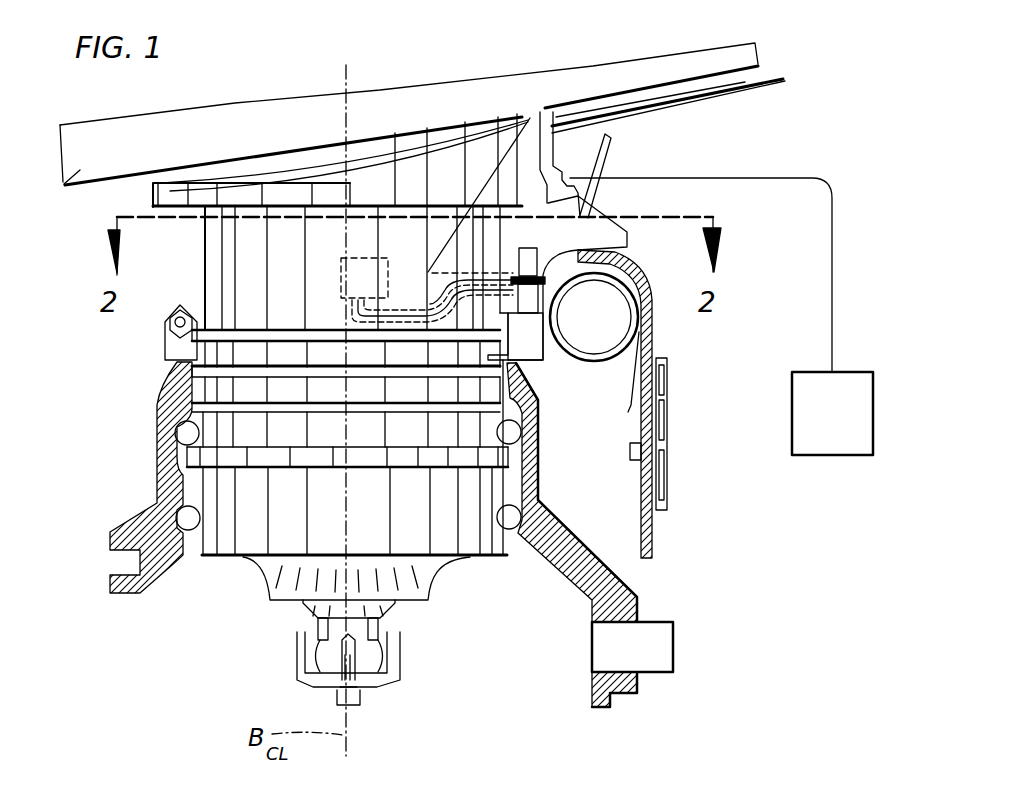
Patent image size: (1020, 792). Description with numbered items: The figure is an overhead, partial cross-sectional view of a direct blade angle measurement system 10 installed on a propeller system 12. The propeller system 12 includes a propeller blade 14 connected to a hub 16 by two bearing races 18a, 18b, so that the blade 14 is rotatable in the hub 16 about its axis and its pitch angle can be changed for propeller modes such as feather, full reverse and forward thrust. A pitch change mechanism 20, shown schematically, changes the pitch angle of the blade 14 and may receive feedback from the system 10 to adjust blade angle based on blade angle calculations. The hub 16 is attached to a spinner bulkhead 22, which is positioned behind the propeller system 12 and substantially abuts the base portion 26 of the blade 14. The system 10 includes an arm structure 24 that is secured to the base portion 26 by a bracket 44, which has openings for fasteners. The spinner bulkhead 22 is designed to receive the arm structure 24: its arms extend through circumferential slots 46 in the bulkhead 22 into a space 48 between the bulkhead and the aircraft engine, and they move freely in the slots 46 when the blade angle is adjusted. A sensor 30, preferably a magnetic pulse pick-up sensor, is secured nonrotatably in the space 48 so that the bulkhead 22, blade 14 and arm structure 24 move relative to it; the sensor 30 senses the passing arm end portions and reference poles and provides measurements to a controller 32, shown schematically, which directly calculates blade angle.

The direct blade angle measurement system 10 is at (748, 254).
The propeller system 12 is at (735, 137).
The propeller blade 14 is at (65, 188).
The hub 16 is at (128, 492).
The bearing race 18a is at (173, 434).
The bearing race 18b is at (173, 516).
The pitch change mechanism 20 is at (395, 694).
The spinner bulkhead 22 is at (657, 540).
The arm structure 24 is at (632, 255).
The base portion 26 is at (247, 247).
The sensor 30 is at (607, 192).
The controller 32 is at (830, 438).
The bracket 44 is at (533, 353).
The circumferential slots 46 is at (623, 117).
The space 48 is at (739, 211).